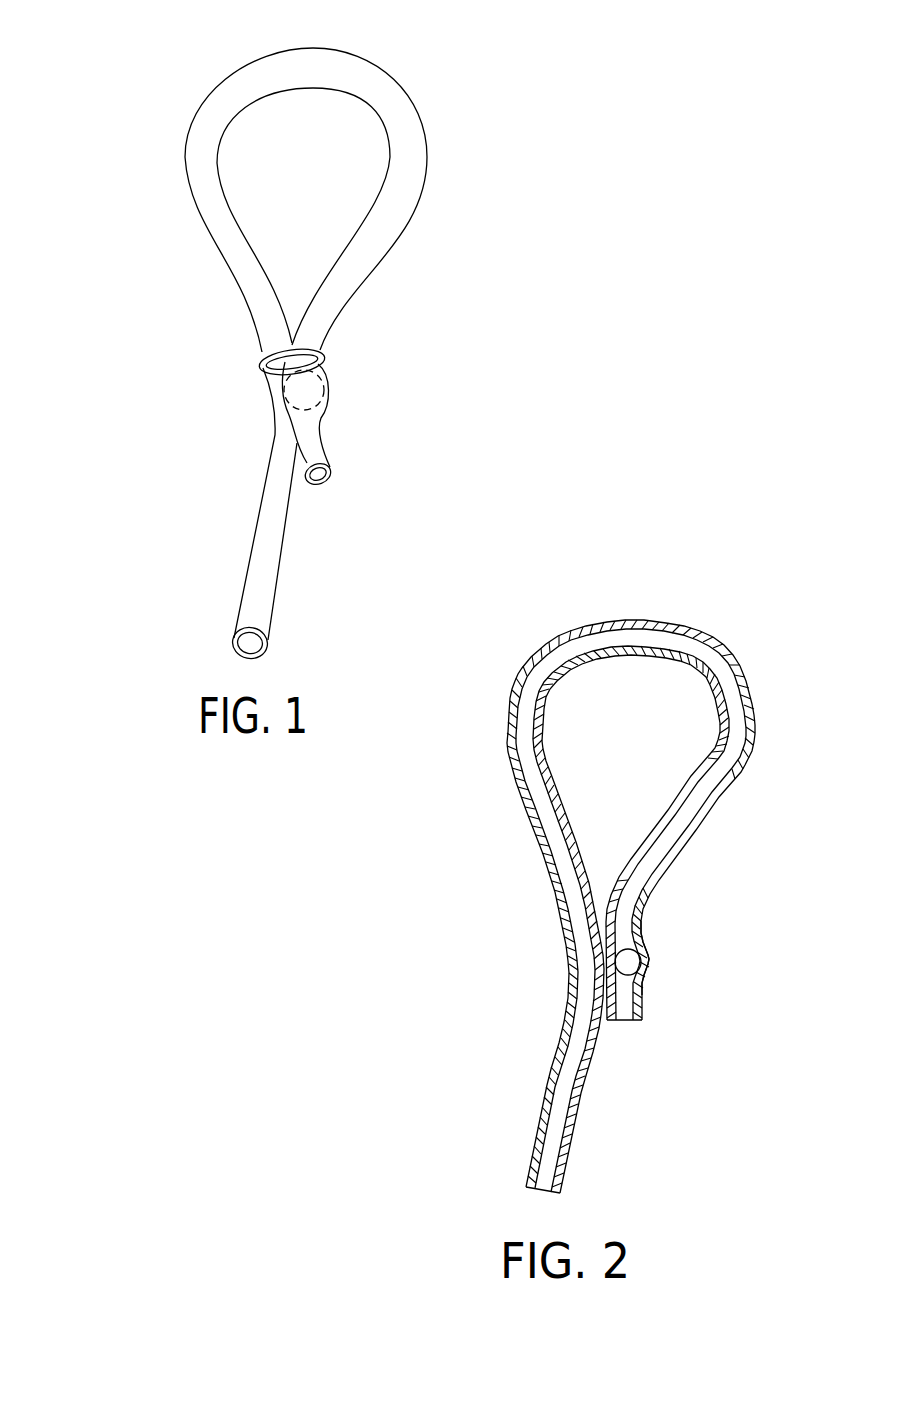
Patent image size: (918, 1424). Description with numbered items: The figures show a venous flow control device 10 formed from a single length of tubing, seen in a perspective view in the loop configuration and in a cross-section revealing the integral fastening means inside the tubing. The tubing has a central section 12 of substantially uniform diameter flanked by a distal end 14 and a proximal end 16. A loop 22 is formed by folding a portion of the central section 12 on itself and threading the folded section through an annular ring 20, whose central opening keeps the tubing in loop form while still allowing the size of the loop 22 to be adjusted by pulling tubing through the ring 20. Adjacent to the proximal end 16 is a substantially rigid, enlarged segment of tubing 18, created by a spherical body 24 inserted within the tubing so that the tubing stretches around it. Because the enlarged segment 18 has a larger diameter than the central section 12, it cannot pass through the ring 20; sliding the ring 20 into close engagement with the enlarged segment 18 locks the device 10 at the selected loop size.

In FIG. 1, the venous flow control device 10 is at (126, 259).
In FIG. 2, the venous flow control device 10 is at (517, 913).
In FIG. 1, the central section 12 is at (415, 142).
In FIG. 2, the central section 12 is at (735, 690).
In FIG. 1, the distal end 14 is at (262, 658).
In FIG. 2, the distal end 14 is at (540, 1194).
In FIG. 1, the proximal end 16 is at (330, 488).
In FIG. 2, the proximal end 16 is at (627, 1025).
In FIG. 1, the enlarged segment of tubing 18 is at (334, 391).
In FIG. 2, the enlarged segment of tubing 18 is at (652, 976).
In FIG. 1, the annular ring 20 is at (259, 363).
In FIG. 1, the loop 22 is at (310, 44).
In FIG. 2, the spherical body 24 is at (630, 960).